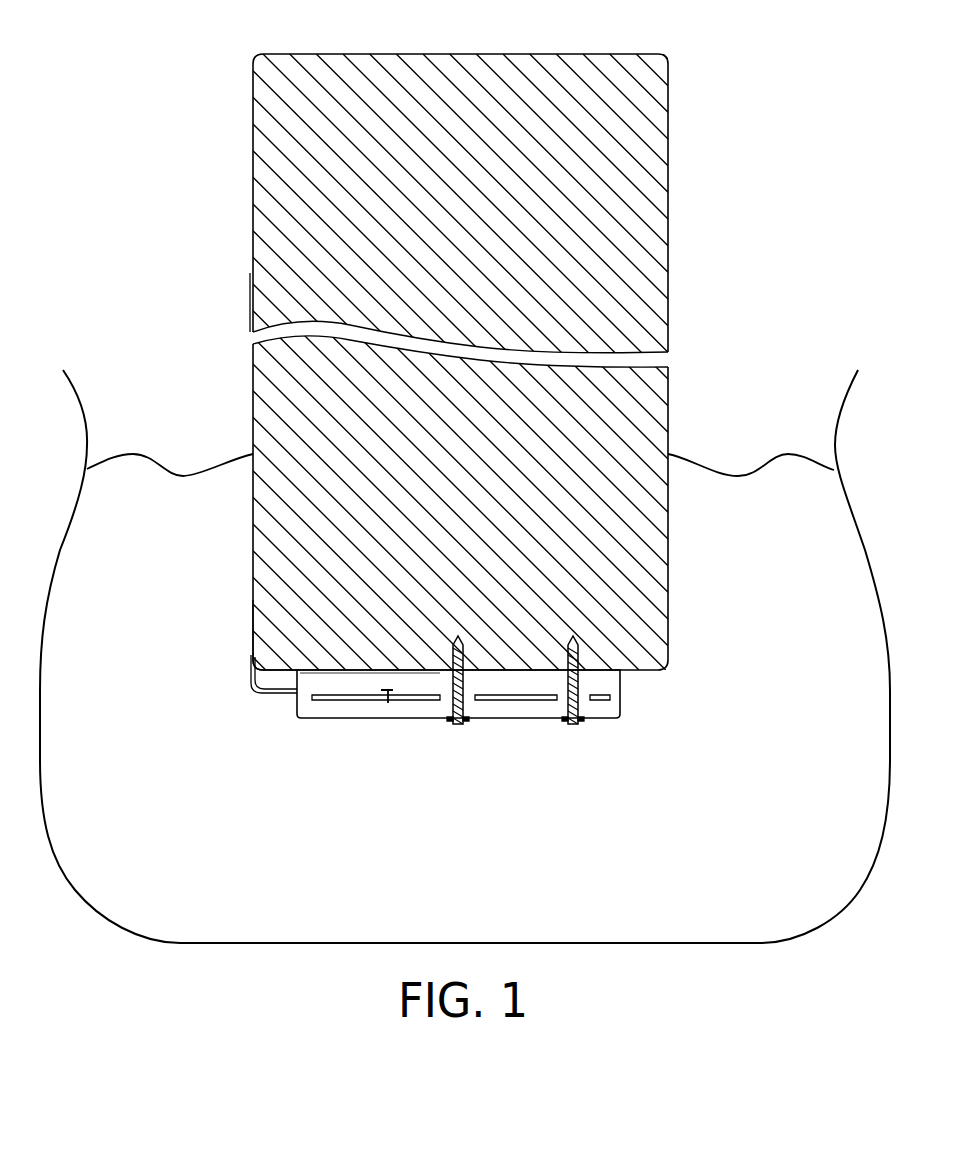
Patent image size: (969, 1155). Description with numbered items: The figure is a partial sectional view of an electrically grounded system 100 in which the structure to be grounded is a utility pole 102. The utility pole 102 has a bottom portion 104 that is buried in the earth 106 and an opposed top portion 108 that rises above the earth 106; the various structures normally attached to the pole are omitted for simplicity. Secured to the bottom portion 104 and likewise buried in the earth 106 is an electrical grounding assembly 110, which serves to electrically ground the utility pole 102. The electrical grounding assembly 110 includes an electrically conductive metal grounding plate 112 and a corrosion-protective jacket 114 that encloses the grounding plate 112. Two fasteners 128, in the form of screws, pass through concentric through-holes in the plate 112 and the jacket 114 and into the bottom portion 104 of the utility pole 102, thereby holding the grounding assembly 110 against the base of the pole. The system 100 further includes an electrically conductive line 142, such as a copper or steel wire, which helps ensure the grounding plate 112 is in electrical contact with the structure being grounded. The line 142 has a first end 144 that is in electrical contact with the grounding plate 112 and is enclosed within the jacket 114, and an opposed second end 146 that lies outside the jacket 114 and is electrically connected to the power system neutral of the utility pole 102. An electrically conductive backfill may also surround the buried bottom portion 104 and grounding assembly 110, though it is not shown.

The electrically grounded system 100 is at (716, 301).
The utility pole 102 is at (285, 297).
The bottom portion 104 is at (275, 608).
The earth 106 is at (700, 810).
The top portion 108 is at (619, 82).
The electrical grounding assembly 110 is at (413, 710).
The grounding plate 112 is at (535, 698).
The corrosion-protective jacket 114 is at (482, 707).
The fasteners 128 is at (463, 650).
The electrically conductive line 142 is at (268, 698).
The first end 144 is at (342, 685).
The second end 146 is at (251, 541).